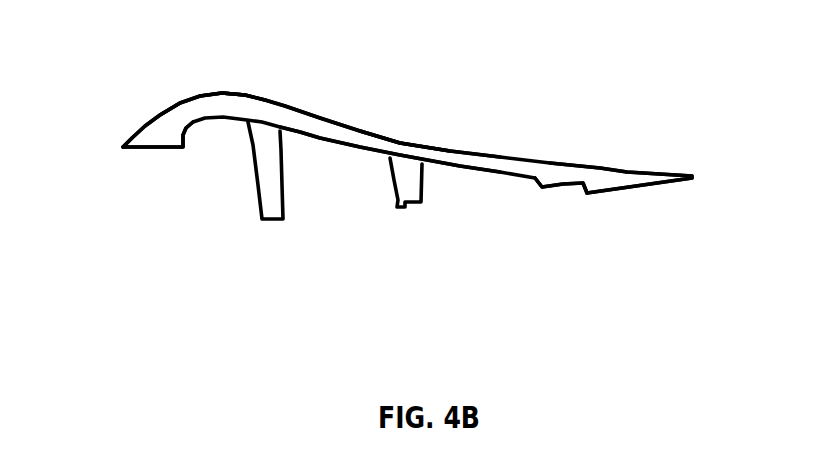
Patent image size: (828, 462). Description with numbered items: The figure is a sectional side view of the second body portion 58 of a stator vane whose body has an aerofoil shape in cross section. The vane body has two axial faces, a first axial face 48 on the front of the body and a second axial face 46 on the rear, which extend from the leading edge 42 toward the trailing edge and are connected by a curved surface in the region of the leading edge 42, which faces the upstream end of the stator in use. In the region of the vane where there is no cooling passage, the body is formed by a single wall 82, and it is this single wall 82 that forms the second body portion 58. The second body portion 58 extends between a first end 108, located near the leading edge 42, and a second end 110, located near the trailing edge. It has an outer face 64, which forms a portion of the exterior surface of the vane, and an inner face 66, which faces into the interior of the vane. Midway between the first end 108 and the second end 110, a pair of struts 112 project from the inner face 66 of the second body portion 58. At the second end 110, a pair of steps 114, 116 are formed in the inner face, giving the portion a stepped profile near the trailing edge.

The leading edge 42 is at (205, 95).
The second axial face 46 is at (160, 117).
The first axial face 48 is at (403, 142).
The second body portion 58 is at (542, 91).
The outer face 64 is at (354, 116).
The inner face 66 is at (379, 219).
The single wall 82 is at (233, 105).
The first end 108 is at (122, 150).
The second end 110 is at (628, 170).
The struts 112 is at (262, 211).
The step 114 is at (563, 186).
The step 116 is at (630, 191).